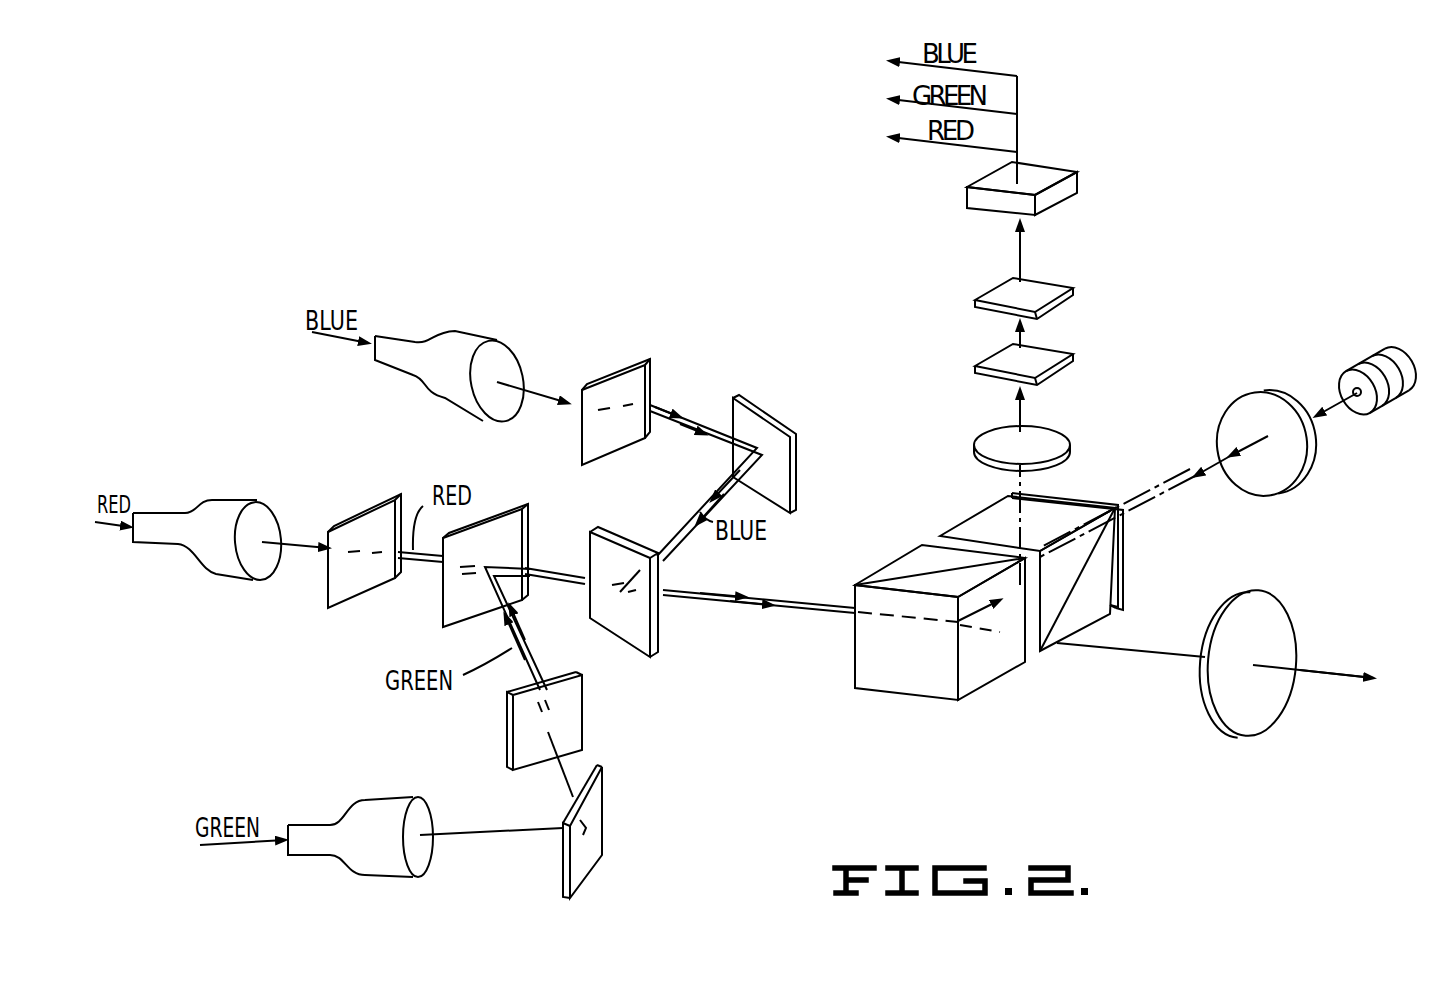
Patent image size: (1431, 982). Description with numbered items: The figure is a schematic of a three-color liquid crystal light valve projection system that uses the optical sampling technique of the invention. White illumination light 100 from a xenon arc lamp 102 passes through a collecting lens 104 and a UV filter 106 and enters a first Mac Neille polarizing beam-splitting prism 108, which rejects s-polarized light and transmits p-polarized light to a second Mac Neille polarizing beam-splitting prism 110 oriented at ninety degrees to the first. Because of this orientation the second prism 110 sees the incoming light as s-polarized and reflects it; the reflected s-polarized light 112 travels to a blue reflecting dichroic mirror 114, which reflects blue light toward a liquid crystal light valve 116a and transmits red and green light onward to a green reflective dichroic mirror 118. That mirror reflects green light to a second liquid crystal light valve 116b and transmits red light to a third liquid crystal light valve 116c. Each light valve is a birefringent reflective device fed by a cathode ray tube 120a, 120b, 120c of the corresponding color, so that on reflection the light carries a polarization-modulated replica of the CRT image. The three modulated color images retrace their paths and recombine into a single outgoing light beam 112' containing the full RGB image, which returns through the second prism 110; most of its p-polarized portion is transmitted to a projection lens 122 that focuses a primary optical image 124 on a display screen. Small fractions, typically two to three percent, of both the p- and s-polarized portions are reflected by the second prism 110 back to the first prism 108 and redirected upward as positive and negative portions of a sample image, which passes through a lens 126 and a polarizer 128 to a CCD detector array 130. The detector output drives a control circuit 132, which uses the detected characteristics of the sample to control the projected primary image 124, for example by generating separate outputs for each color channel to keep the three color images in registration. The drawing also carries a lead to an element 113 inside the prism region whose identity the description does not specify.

The white illumination light 100 is at (1330, 407).
The xenon arc lamp 102 is at (1388, 362).
The collecting lens 104 is at (1290, 484).
The UV filter 106 is at (1083, 498).
The first Mac Neille polarizing beam-splitting prism 108 is at (1105, 578).
The second Mac Neille polarizing beam-splitting prism 110 is at (907, 687).
The reflected s-polarized light 112 is at (759, 582).
The outgoing light beam 112' is at (1065, 659).
The beam splitting surface 113 is at (1007, 595).
The blue reflecting dichroic mirror 114 is at (660, 648).
The liquid crystal light valve 116a is at (635, 362).
The second liquid crystal light valve 116b is at (584, 717).
The third liquid crystal light valve 116c is at (330, 612).
The green reflective dichroic mirror 118 is at (443, 621).
The cathode ray tube 120a is at (460, 332).
The cathode ray tube 120b is at (378, 880).
The cathode ray tube 120c is at (217, 575).
The projection lens 122 is at (1287, 610).
The primary optical image 124 is at (1330, 670).
The lens 126 is at (1068, 438).
The polarizer 128 is at (1060, 356).
The CCD detector array 130 is at (1060, 290).
The control circuit 132 is at (1078, 195).